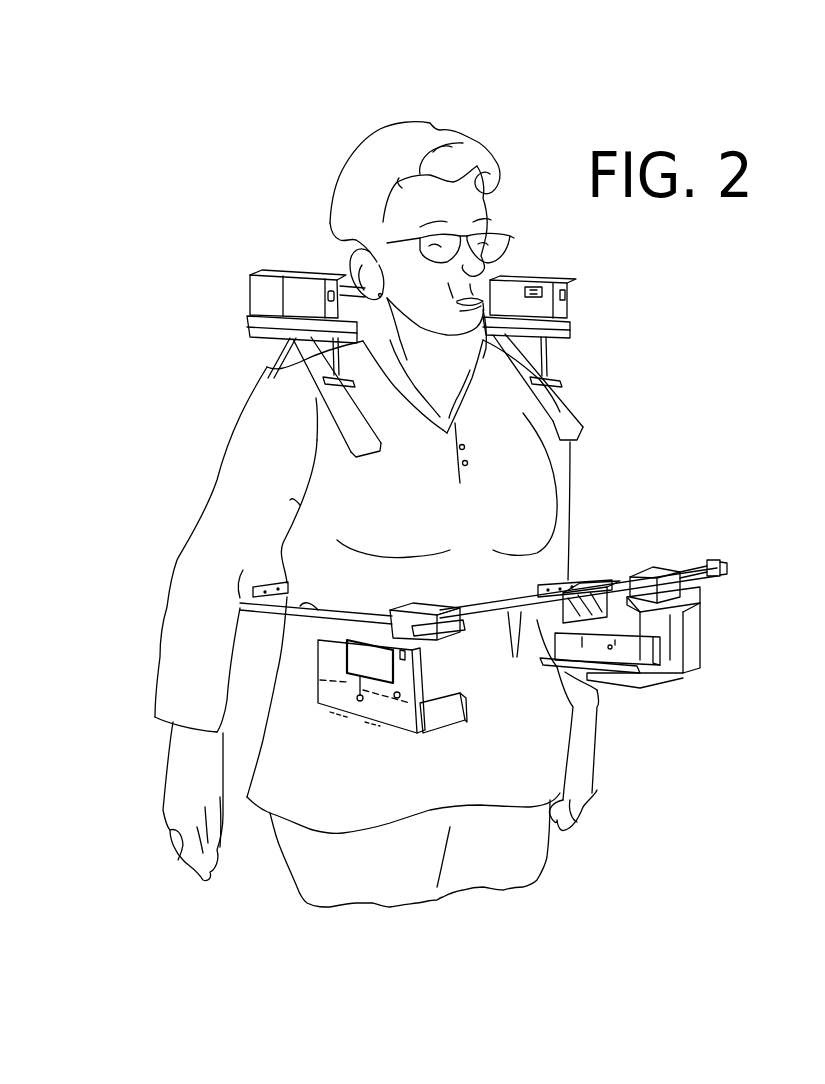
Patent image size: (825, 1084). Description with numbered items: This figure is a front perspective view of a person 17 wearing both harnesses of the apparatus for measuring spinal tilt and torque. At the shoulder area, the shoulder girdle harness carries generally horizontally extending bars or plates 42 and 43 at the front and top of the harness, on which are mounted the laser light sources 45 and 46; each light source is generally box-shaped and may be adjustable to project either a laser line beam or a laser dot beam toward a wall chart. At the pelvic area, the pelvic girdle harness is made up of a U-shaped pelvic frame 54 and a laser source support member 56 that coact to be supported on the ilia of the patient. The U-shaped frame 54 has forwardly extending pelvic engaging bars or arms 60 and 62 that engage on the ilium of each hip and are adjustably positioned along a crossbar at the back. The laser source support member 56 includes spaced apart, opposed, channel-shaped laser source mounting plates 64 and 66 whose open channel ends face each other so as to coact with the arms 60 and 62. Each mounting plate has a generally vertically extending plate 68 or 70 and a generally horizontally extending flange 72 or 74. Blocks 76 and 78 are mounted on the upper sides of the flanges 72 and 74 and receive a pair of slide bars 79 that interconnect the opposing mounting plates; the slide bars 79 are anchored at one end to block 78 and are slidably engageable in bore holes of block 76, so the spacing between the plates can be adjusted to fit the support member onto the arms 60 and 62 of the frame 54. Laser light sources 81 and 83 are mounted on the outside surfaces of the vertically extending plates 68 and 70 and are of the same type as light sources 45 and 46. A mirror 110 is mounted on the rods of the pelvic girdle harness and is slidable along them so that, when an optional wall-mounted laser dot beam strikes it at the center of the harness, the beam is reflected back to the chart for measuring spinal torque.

The person 17 is at (473, 135).
The horizontally extending bar 42 is at (568, 329).
The horizontally extending bar 43 is at (293, 323).
The light source 45 is at (558, 290).
The light source 46 is at (330, 279).
The U-shaped pelvic frame 54 is at (257, 593).
The laser source support member 56 is at (713, 593).
The pelvic engaging arm 60 is at (538, 580).
The pelvic engaging arm 62 is at (270, 601).
The laser source mounting plate 64 is at (687, 665).
The laser source mounting plate 66 is at (383, 703).
The vertically extending plate 68 is at (672, 626).
The vertically extending plate 70 is at (327, 658).
The horizontally extending flange 72 is at (651, 650).
The horizontally extending flange 74 is at (460, 650).
The block 76 is at (670, 580).
The block 78 is at (426, 630).
The slide bars 79 is at (519, 650).
The laser light source 81 is at (692, 620).
The laser light source 83 is at (373, 655).
The mirror 110 is at (587, 586).